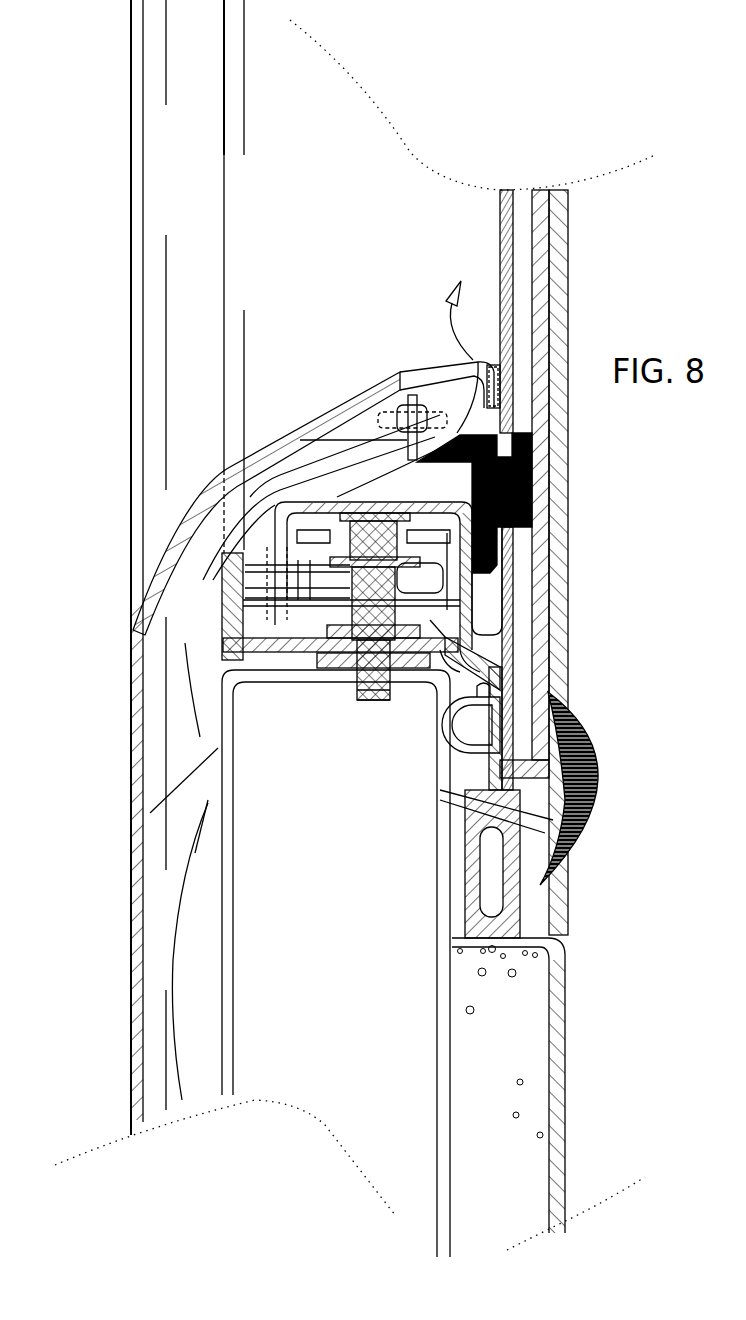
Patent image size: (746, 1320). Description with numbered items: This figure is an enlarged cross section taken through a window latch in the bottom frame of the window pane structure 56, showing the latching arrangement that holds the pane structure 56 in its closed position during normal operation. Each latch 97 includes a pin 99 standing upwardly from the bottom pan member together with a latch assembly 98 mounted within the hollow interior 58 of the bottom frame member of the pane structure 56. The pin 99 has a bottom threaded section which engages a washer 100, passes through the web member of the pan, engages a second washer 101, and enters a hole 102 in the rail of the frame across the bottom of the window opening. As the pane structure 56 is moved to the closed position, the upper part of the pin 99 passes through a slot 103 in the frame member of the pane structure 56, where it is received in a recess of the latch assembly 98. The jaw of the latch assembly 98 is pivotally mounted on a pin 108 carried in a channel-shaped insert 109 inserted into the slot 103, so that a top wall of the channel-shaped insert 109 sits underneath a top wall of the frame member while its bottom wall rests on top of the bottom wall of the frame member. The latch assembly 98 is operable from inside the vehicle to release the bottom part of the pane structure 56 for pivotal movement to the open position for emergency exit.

The pane structure 56 is at (281, 521).
The hollow interior 58 is at (300, 523).
The latch 97 is at (358, 703).
The latch assembly 98 is at (410, 516).
The pin 99 is at (392, 688).
The washer 100 is at (345, 628).
The washer 101 is at (325, 668).
The hole 102 is at (390, 678).
The slot 103 is at (289, 557).
The pin 108 is at (460, 582).
The channel-shaped insert 109 is at (548, 507).